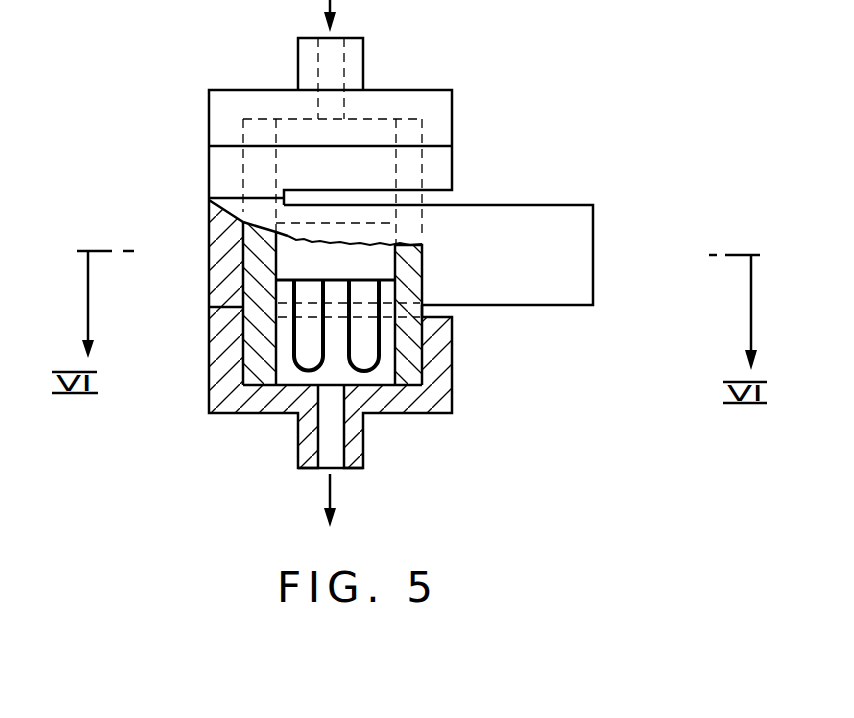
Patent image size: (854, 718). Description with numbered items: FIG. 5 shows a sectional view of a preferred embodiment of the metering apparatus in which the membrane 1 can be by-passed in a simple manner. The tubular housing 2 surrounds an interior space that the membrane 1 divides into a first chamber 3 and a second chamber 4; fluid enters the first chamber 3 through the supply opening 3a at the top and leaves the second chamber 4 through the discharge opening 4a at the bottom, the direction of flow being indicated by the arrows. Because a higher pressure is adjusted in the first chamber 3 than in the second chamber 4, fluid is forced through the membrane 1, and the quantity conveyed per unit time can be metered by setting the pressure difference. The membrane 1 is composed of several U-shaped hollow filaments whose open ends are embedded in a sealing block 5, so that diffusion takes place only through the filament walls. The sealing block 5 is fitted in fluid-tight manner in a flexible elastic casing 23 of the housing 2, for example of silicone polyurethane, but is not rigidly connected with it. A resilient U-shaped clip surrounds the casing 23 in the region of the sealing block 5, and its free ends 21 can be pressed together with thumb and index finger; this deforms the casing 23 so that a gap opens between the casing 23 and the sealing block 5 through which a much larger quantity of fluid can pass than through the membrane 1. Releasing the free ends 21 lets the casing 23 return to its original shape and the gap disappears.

The membrane 1 is at (372, 342).
The housing 2 is at (223, 107).
The first chamber 3 is at (405, 132).
The supply opening 3a is at (328, 63).
The second chamber 4 is at (383, 373).
The discharge opening 4a is at (328, 435).
The sealing block 5 is at (287, 247).
The free ends 21 is at (490, 222).
The casing 23 is at (413, 275).